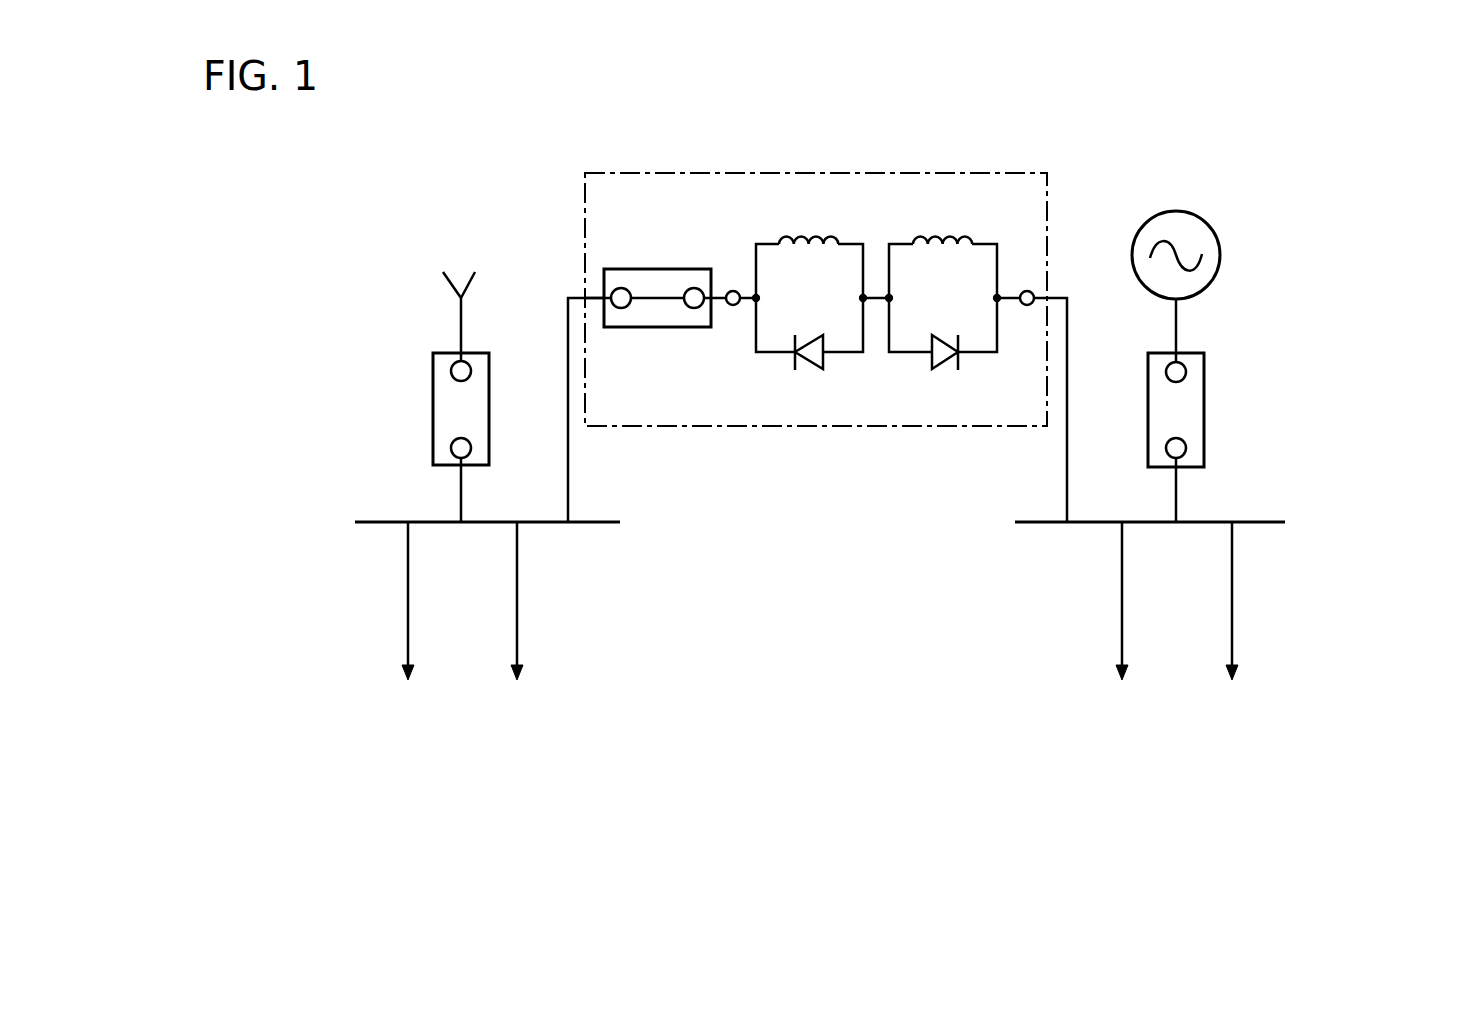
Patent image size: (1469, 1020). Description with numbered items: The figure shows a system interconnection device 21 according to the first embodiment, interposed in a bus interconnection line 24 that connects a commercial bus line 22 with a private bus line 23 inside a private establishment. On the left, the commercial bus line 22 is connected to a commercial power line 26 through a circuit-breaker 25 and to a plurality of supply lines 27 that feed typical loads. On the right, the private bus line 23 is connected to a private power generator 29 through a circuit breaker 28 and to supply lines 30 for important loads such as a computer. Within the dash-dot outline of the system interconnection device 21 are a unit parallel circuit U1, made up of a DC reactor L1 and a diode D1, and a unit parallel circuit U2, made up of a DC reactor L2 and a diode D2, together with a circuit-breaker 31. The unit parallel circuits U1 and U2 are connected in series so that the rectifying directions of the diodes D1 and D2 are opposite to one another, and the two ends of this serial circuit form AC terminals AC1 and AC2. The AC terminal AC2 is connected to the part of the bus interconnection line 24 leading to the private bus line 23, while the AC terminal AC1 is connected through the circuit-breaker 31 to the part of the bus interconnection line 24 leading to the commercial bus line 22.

The system interconnection device 21 is at (620, 173).
The commercial bus line 22 is at (370, 522).
The private bus line 23 is at (1303, 487).
The bus interconnection line 24 is at (568, 477).
The circuit-breaker 25 is at (433, 408).
The commercial power line 26 is at (461, 325).
The supply lines 27 is at (408, 636).
The circuit breaker 28 is at (1204, 408).
The private power generator 29 is at (1220, 255).
The supply lines 30 is at (1122, 636).
The circuit-breaker 31 is at (621, 327).
The AC terminal AC1 is at (733, 291).
The AC terminal AC2 is at (1028, 290).
The unit parallel circuit U1 is at (810, 296).
The unit parallel circuit U2 is at (933, 296).
The DC reactor L1 is at (800, 250).
The DC reactor L2 is at (935, 250).
The diode D1 is at (810, 360).
The diode D2 is at (955, 365).